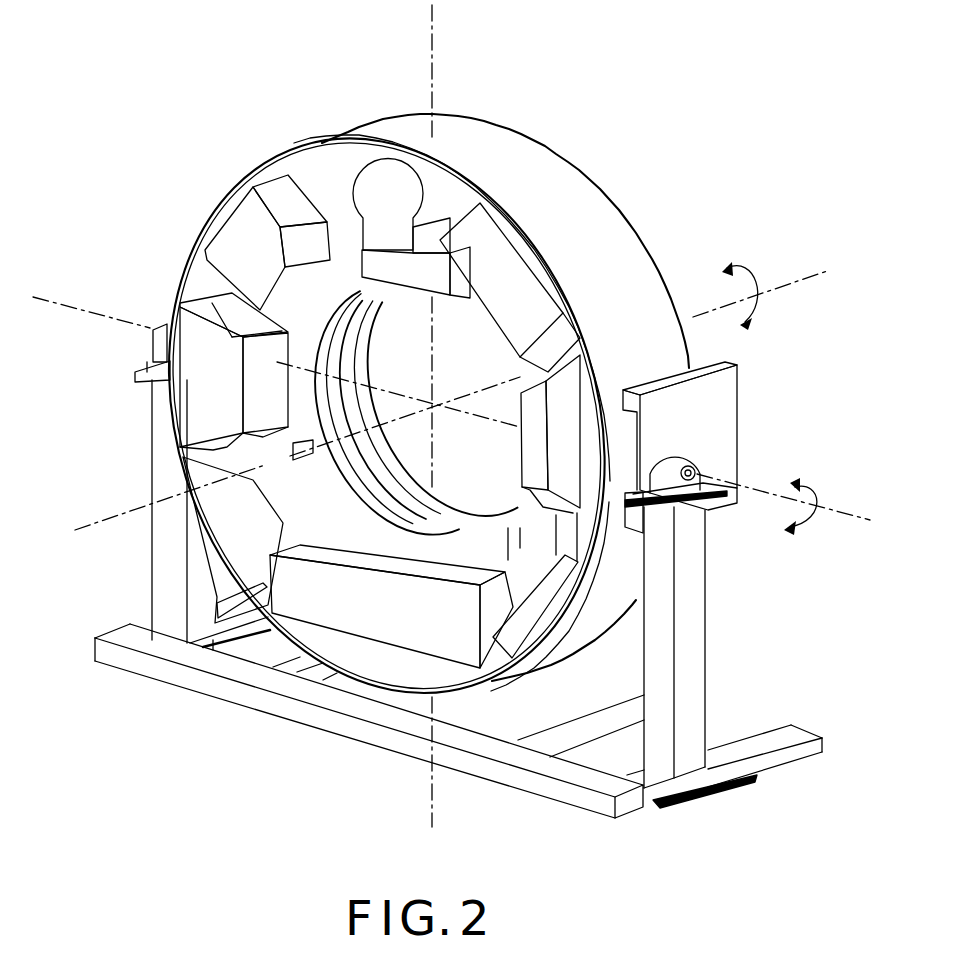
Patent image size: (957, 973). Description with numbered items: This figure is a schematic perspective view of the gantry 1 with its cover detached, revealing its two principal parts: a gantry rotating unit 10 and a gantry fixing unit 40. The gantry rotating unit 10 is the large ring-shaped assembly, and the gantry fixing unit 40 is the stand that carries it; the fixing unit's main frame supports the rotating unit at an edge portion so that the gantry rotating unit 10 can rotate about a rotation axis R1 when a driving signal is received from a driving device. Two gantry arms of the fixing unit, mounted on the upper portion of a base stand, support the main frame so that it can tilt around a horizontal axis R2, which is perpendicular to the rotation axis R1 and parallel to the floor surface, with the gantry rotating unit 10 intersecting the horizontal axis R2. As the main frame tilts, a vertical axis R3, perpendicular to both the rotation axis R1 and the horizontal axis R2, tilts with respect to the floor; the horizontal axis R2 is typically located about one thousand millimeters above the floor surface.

The gantry 1 is at (686, 112).
The gantry rotating unit 10 is at (314, 114).
The gantry fixing unit 40 is at (753, 413).
The rotation axis R1 is at (807, 275).
The horizontal axis R2 is at (840, 507).
The vertical axis R3 is at (433, 22).